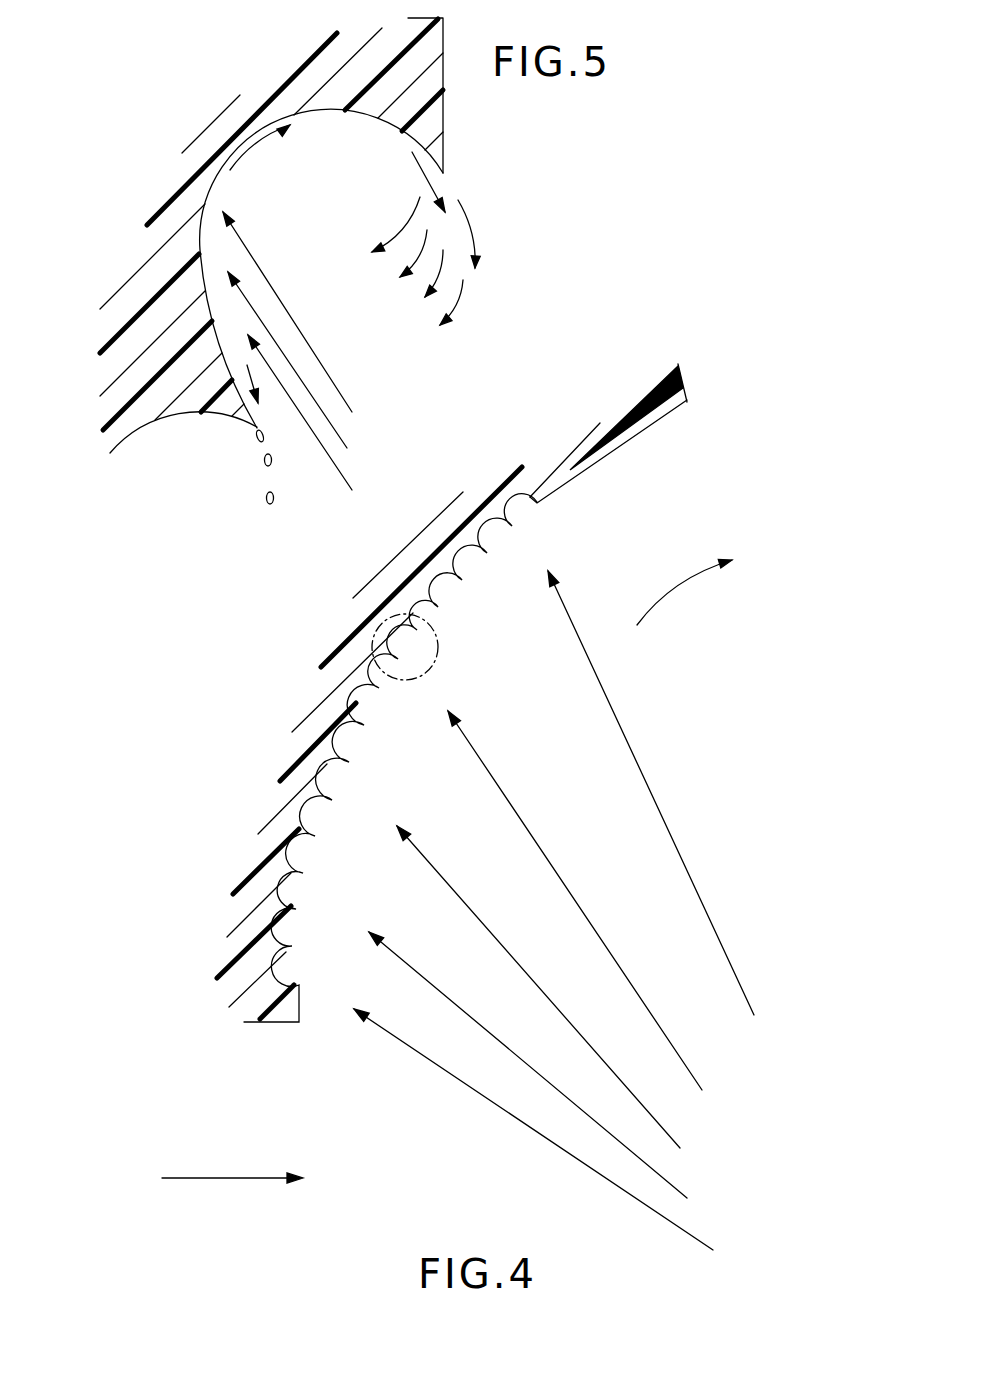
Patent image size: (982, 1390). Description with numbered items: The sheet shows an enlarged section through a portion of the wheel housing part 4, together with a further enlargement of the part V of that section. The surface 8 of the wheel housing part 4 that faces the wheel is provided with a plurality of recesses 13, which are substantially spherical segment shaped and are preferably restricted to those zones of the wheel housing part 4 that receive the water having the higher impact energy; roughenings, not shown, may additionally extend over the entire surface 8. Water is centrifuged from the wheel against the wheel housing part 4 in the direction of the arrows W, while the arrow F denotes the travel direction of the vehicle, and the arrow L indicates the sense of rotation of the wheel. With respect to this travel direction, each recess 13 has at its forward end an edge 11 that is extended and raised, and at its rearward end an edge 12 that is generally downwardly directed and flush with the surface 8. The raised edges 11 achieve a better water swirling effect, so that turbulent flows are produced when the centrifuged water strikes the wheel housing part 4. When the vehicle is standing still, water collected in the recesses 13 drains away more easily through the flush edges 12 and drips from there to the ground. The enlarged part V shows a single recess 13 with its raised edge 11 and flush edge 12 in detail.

In FIG. 4, the wheel housing part 4 is at (637, 405).
In FIG. 4, the surface of the wheel housing part 8 is at (582, 472).
In FIG. 5, the edges at the forward ends of the recesses 11 is at (430, 172).
In FIG. 5, the edges at the rearward ends of the recesses 12 is at (258, 423).
In FIG. 5, the spherical segment shaped recesses 13 is at (287, 116).
In FIG. 5, the arrows indicating centrifuged water W is at (331, 458).
In FIG. 4, the arrows indicating centrifuged water W is at (571, 890).
In FIG. 4, the enlarged part V is at (355, 623).
In FIG. 4, the direction of rotation L is at (680, 600).
In FIG. 4, the travel direction arrow F is at (222, 1180).